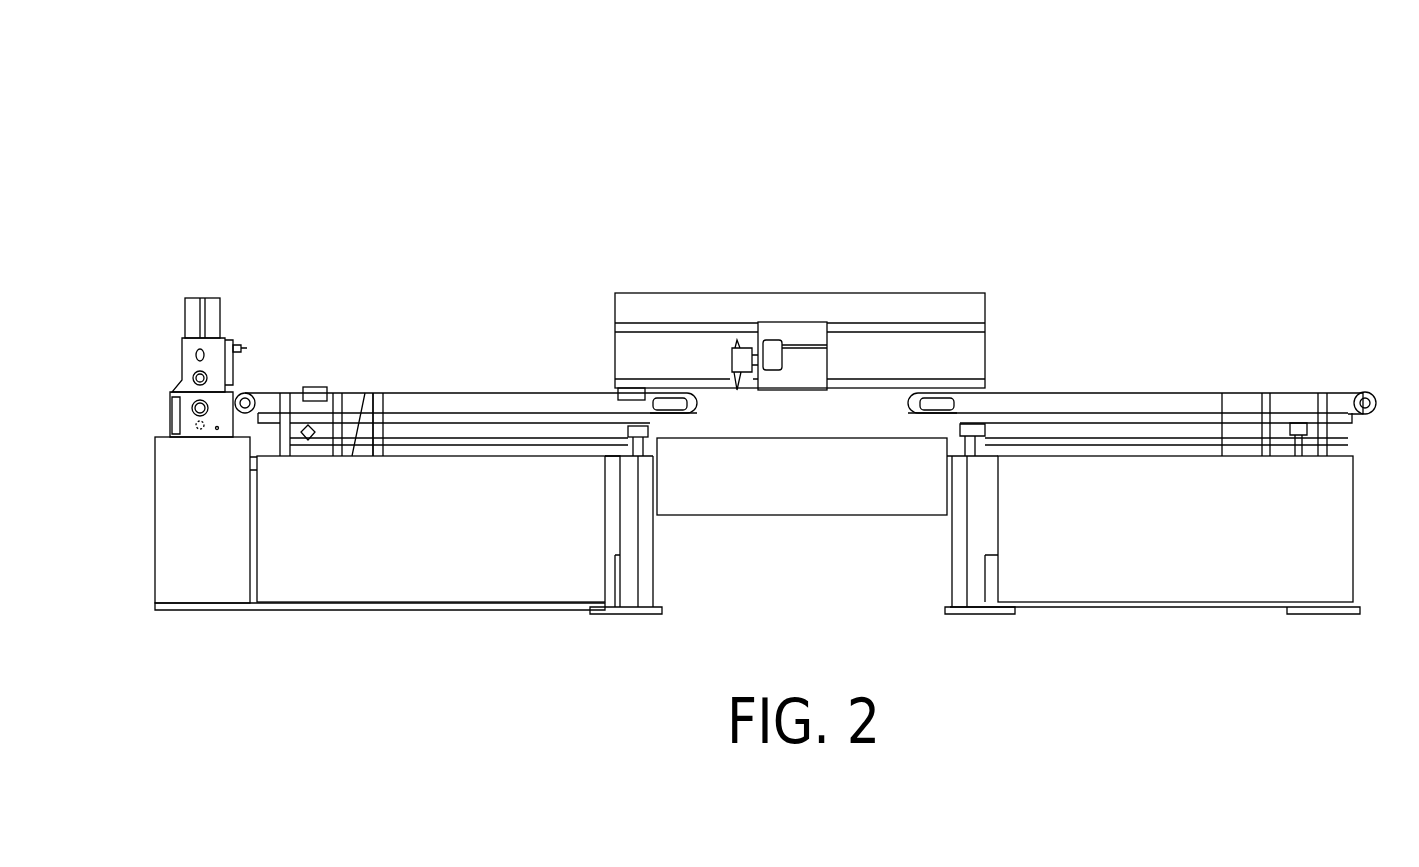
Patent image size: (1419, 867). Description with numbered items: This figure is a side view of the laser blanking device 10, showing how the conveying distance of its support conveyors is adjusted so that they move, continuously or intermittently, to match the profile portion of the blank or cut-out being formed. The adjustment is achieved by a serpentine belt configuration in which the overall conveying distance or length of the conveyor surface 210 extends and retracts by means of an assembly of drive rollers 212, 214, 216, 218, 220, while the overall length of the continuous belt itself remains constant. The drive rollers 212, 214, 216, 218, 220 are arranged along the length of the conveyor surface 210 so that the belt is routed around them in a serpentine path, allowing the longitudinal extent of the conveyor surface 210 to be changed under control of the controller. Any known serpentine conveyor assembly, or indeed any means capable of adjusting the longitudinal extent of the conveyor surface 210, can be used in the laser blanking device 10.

The laser blanking device 10 is at (1050, 257).
The conveyor surface 210 is at (386, 392).
The drive roller 212 is at (250, 392).
The drive roller 214 is at (308, 440).
The drive roller 216 is at (698, 410).
The drive roller 218 is at (388, 420).
The drive roller 220 is at (638, 432).